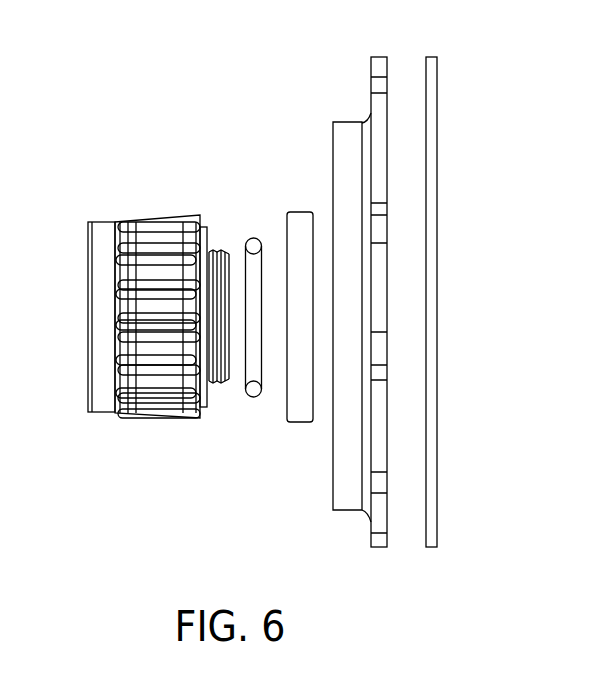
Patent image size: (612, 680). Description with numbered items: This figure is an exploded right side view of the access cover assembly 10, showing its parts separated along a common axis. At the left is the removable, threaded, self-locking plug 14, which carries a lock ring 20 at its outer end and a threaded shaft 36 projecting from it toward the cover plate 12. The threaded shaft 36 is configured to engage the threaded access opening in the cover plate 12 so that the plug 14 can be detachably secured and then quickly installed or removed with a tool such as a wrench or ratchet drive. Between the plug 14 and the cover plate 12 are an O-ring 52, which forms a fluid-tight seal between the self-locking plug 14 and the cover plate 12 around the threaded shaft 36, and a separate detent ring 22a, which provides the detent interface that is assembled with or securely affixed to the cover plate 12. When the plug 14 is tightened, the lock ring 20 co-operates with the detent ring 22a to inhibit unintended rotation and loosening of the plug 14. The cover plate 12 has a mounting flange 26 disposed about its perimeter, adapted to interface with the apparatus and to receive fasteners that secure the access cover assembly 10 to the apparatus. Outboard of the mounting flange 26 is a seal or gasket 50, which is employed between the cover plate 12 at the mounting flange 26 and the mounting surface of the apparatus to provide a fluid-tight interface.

The access cover assembly 10 is at (58, 56).
The cover plate 12 is at (334, 141).
The self-locking plug 14 is at (101, 223).
The lock ring 20 is at (100, 405).
The detent ring 22a is at (298, 422).
The mounting flange 26 is at (371, 537).
The threaded shaft 36 is at (222, 251).
The seal or gasket 50 is at (440, 95).
The O-ring 52 is at (245, 392).